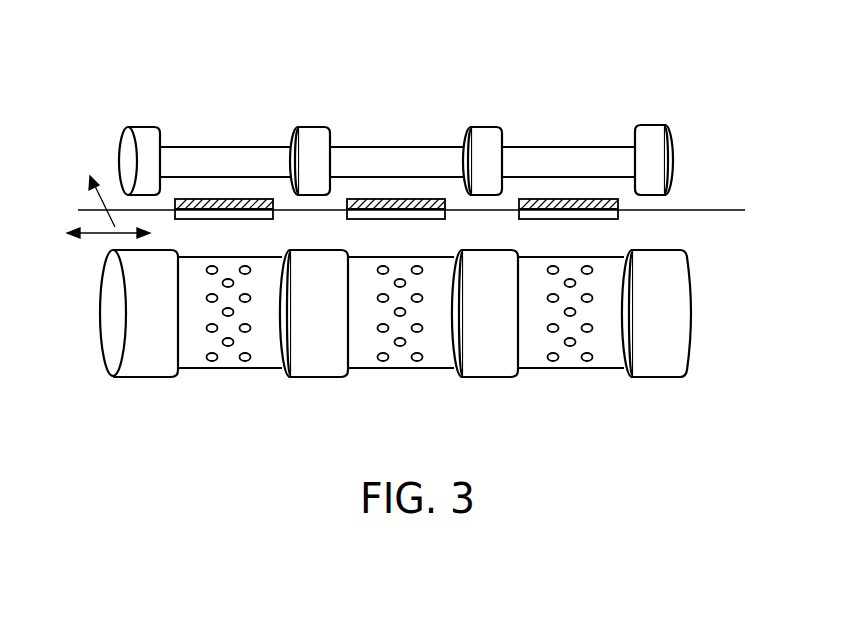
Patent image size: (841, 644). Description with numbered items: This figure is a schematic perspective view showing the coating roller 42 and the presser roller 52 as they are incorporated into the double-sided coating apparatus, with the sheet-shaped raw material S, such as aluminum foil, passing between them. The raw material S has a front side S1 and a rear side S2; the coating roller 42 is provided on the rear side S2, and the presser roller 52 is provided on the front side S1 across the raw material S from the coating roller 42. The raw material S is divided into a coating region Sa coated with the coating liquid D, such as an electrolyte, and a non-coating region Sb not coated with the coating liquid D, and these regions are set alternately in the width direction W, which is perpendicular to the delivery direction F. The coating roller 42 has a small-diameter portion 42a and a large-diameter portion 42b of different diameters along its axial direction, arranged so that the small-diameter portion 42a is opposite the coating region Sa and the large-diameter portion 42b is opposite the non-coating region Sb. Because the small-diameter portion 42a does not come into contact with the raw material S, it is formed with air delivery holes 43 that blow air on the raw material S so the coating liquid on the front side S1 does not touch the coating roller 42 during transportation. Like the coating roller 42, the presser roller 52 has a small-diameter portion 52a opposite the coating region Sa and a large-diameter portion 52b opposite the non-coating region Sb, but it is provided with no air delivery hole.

The presser roller 52 is at (397, 135).
The small-diameter portion 52a is at (440, 153).
The large-diameter portion 52b is at (143, 127).
The raw material S is at (431, 174).
The coating region Sa is at (248, 203).
The non-coating region Sb is at (293, 210).
The coating liquid D is at (204, 199).
The front side S1 is at (730, 207).
The rear side S2 is at (697, 212).
The delivery direction F is at (99, 187).
The width direction W is at (98, 237).
The coating roller 42 is at (396, 342).
The small-diameter portion 42a is at (404, 346).
The large-diameter portion 42b is at (138, 370).
The air delivery holes 43 is at (603, 362).